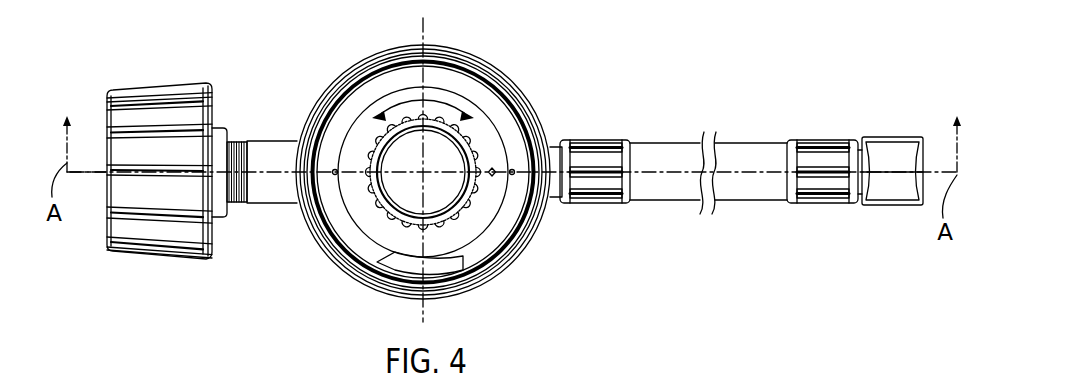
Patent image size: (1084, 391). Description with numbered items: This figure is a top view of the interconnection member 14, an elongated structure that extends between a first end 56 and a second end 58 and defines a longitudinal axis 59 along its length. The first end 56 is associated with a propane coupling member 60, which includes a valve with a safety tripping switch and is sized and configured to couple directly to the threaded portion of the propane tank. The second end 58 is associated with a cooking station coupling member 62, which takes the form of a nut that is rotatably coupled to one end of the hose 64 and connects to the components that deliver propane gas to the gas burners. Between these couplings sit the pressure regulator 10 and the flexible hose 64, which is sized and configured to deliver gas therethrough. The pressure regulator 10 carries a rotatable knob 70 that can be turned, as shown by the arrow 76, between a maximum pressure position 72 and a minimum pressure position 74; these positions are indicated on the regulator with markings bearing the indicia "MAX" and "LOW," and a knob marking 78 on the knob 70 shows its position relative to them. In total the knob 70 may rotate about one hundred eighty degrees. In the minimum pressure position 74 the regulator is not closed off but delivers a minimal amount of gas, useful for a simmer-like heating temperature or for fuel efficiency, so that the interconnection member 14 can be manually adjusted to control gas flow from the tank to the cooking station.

The pressure regulator 10 is at (530, 111).
The interconnection member 14 is at (683, 93).
The first end 56 is at (107, 97).
The second end 58 is at (923, 137).
The longitudinal axis 59 is at (88, 175).
The propane coupling member 60 is at (129, 83).
The cooking station coupling member 62 is at (889, 211).
The hose 64 is at (753, 201).
The rotatable knob 70 is at (460, 218).
The maximum pressure position 72 is at (513, 175).
The minimum pressure position 74 is at (334, 175).
The arrow 76 is at (407, 100).
The knob marking 78 is at (494, 166).